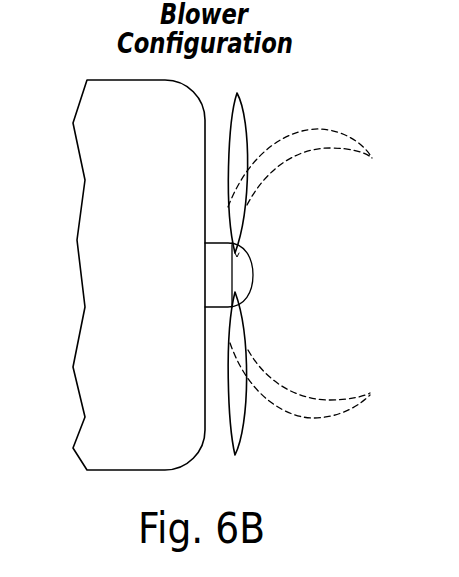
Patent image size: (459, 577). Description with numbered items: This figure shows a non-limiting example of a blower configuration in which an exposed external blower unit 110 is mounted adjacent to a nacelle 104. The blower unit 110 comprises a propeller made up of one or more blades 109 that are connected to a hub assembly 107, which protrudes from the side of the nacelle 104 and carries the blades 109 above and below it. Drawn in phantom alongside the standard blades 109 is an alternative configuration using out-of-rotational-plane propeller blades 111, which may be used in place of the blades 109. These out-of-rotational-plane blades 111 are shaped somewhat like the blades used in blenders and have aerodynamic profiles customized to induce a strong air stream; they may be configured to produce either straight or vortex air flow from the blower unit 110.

The nacelle 104 is at (112, 303).
The hub assembly 107 is at (253, 275).
The blades 109 is at (235, 123).
The exposed external blower unit 110 is at (318, 110).
The out-of-rotational-plane propeller blades 111 is at (308, 152).